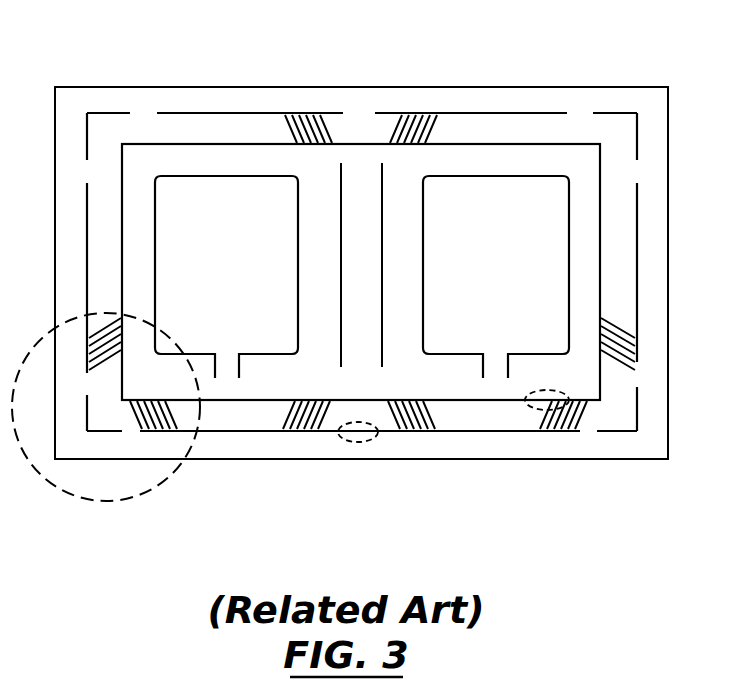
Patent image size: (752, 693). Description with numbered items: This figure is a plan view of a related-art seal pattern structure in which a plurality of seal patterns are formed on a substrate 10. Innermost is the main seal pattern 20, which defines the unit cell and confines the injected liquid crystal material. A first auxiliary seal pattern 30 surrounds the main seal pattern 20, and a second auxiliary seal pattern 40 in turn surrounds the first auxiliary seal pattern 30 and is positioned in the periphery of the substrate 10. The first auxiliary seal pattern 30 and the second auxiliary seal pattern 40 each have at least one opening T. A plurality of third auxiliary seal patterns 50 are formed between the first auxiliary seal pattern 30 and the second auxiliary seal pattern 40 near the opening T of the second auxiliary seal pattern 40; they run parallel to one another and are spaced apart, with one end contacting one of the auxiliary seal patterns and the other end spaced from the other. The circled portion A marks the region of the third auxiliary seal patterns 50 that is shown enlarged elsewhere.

The substrate 10 is at (600, 86).
The main seal pattern 20 is at (260, 175).
The first auxiliary seal pattern 30 is at (460, 143).
The second auxiliary seal pattern 40 is at (202, 113).
The third auxiliary seal patterns 50 is at (330, 120).
The portion A is at (176, 472).
The opening T is at (537, 408).